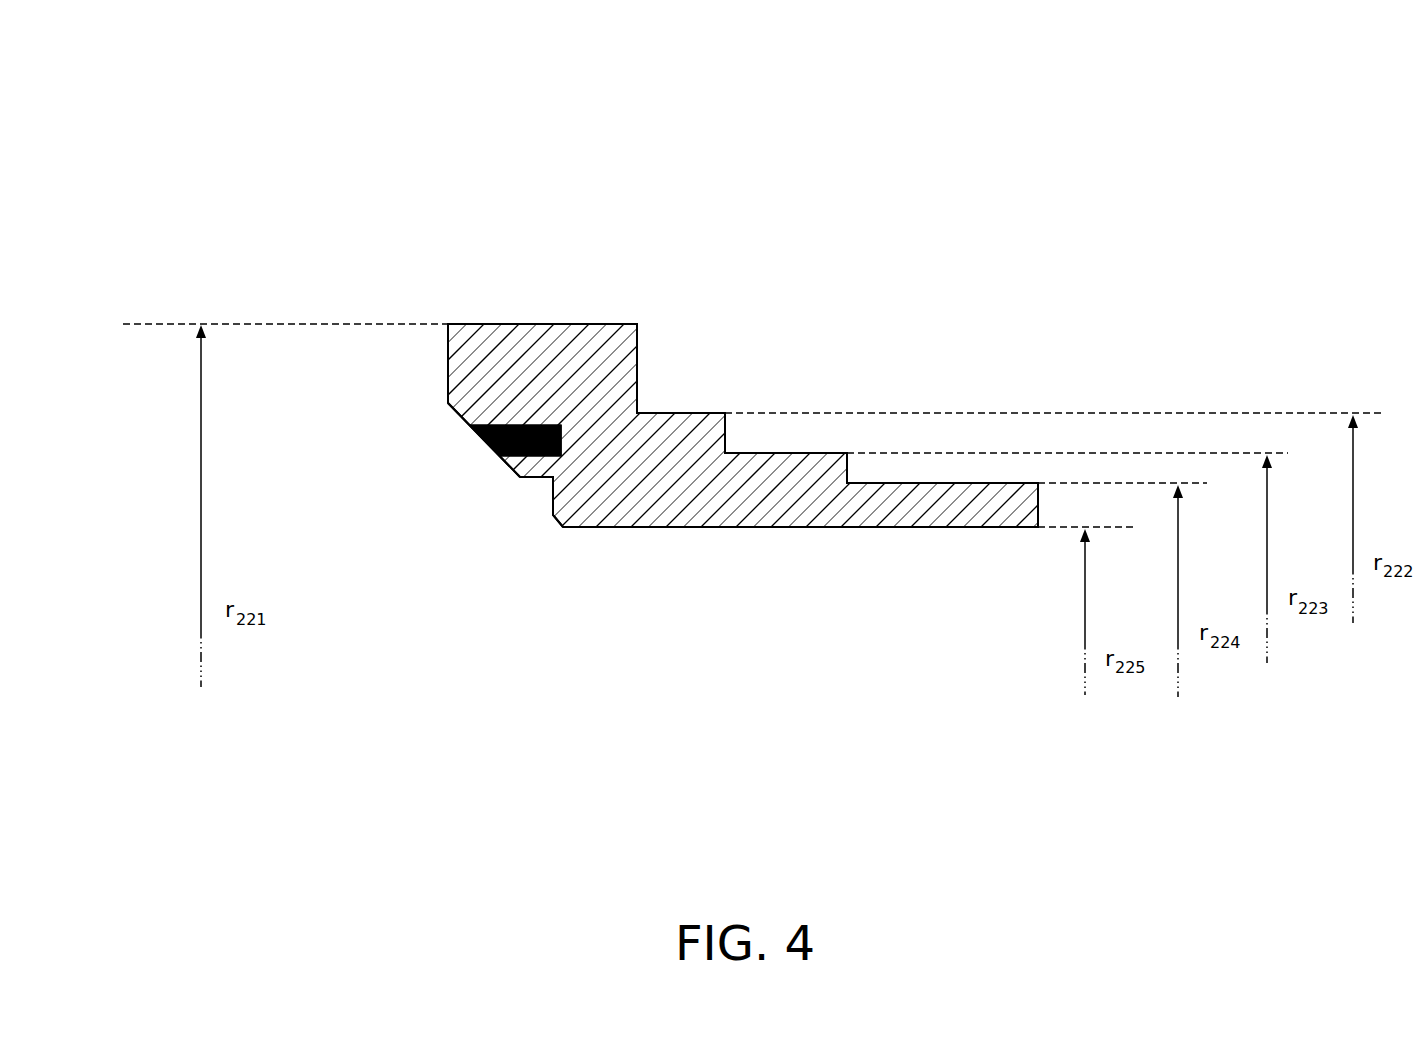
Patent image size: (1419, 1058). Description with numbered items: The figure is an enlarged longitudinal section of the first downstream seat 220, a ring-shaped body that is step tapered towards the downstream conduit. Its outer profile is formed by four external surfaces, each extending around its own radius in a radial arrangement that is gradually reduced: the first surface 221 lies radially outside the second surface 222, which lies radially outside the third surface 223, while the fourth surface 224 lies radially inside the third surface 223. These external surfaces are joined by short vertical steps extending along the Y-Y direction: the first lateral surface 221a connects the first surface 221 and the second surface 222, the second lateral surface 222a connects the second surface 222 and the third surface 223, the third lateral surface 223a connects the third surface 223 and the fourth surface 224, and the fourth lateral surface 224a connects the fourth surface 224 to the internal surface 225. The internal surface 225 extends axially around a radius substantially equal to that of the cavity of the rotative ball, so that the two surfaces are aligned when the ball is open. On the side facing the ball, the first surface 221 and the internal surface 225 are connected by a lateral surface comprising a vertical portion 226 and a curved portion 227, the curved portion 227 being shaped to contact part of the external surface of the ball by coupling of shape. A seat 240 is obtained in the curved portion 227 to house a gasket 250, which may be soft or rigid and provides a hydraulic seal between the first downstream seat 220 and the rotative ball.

The first downstream seat 220 is at (740, 120).
The first surface 221 is at (508, 323).
The first lateral surface 221a is at (638, 352).
The second surface 222 is at (681, 413).
The second lateral surface 222a is at (726, 437).
The third surface 223 is at (806, 453).
The third lateral surface 223a is at (850, 470).
The fourth surface 224 is at (960, 483).
The fourth lateral surface 224a is at (1040, 505).
The internal surface 225 is at (897, 528).
The vertical portion 226 is at (447, 378).
The curved portion 227 is at (517, 473).
The seat 240 is at (561, 456).
The gasket 250 is at (483, 438).